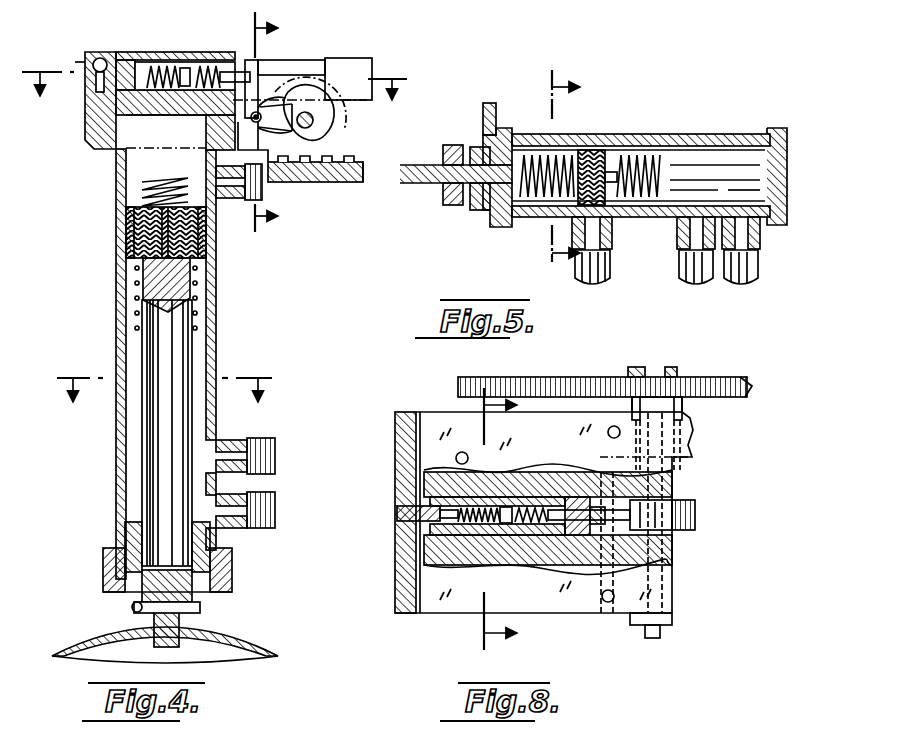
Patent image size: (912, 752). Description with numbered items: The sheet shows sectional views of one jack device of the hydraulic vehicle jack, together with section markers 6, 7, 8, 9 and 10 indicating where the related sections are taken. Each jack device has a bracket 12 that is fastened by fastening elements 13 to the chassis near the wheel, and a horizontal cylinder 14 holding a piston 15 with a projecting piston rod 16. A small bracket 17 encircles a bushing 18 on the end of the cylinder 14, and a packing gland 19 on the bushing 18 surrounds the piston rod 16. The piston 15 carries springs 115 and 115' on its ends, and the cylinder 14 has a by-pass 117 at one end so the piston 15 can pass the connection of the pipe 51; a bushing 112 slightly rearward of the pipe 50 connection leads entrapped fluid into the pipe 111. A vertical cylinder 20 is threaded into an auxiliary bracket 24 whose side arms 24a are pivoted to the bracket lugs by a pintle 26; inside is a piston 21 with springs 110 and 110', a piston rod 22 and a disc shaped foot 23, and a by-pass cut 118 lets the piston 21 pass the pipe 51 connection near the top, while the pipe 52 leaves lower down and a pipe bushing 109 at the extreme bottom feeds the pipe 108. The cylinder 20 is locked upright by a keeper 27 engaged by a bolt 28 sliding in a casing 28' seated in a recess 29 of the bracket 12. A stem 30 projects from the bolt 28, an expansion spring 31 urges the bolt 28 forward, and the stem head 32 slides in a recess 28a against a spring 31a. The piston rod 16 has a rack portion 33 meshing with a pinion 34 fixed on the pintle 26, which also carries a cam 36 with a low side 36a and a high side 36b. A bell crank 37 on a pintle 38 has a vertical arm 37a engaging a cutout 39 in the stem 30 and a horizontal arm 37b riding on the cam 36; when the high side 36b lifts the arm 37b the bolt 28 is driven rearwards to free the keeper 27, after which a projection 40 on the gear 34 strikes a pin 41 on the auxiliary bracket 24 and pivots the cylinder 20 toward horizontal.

In FIG. 4, the section line 6- 6 is at (162, 391).
In FIG. 5, the section line 7- 7 is at (557, 168).
In FIG. 4, the section line 8- 8 is at (212, 89).
In FIG. 4, the section line 9- 9 is at (266, 123).
In FIG. 8, the wheel 10 is at (483, 519).
In FIG. 8, the bracket 12 is at (432, 616).
In FIG. 8, the fastening element 13 is at (608, 602).
In FIG. 5, the horizontal cylinder 14 is at (694, 136).
In FIG. 5, the piston 15 is at (590, 160).
In FIG. 5, the piston rod 16 is at (422, 165).
In FIG. 8, the piston rod 16 is at (748, 382).
In FIG. 5, the small bracket 17 is at (490, 103).
In FIG. 5, the bushing 18 is at (478, 211).
In FIG. 5, the packing gland 19 is at (450, 206).
In FIG. 4, the vertical cylinder 20 is at (116, 350).
In FIG. 4, the piston 21 is at (126, 214).
In FIG. 4, the piston rod 22 is at (152, 447).
In FIG. 4, the foot 23 is at (238, 648).
In FIG. 4, the auxiliary bracket 24 is at (90, 133).
In FIG. 8, the auxiliary bracket 24 is at (400, 600).
In FIG. 8, the side arm 24a is at (694, 437).
In FIG. 8, the pintle 26 is at (660, 636).
In FIG. 4, the keeper 27 is at (84, 58).
In FIG. 8, the keeper 27 is at (400, 572).
In FIG. 8, the bolt 28 is at (407, 513).
In FIG. 4, the casing 28' is at (175, 41).
In FIG. 8, the casing 28' is at (516, 479).
In FIG. 4, the recess 28a is at (120, 104).
In FIG. 8, the recess 28a is at (424, 545).
In FIG. 4, the recess 29 is at (112, 58).
In FIG. 8, the recess 29 is at (496, 497).
In FIG. 4, the stem 30 is at (238, 72).
In FIG. 8, the stem 30 is at (578, 524).
In FIG. 4, the expansion spring 31 is at (208, 66).
In FIG. 8, the expansion spring 31 is at (536, 506).
In FIG. 4, the expansion spring 31a is at (150, 105).
In FIG. 8, the expansion spring 31a is at (455, 540).
In FIG. 4, the head 32 is at (185, 68).
In FIG. 8, the head 32 is at (502, 524).
In FIG. 4, the rack portion 33 is at (330, 178).
In FIG. 8, the rack portion 33 is at (722, 377).
In FIG. 4, the pinion 34 is at (352, 178).
In FIG. 8, the pinion 34 is at (690, 377).
In FIG. 4, the cam 36 is at (330, 128).
In FIG. 8, the cam 36 is at (690, 500).
In FIG. 4, the low side 36a is at (300, 180).
In FIG. 4, the high side 36b is at (338, 146).
In FIG. 4, the bell crank 37 is at (300, 96).
In FIG. 8, the bell crank 37 is at (672, 548).
In FIG. 4, the vertical arm 37a is at (255, 60).
In FIG. 4, the horizontal arm 37b is at (270, 165).
In FIG. 4, the pintle 38 is at (215, 122).
In FIG. 8, the pintle 38 is at (603, 612).
In FIG. 4, the cutout 39 is at (278, 110).
In FIG. 8, the cutout 39 is at (576, 497).
In FIG. 4, the projection 40 is at (318, 118).
In FIG. 8, the projection 40 is at (684, 406).
In FIG. 4, the pin 41 is at (315, 78).
In FIG. 8, the pin 41 is at (608, 380).
In FIG. 5, the pipe 50 is at (679, 264).
In FIG. 4, the pipe 51 is at (238, 200).
In FIG. 5, the pipe 51 is at (612, 256).
In FIG. 4, the pipe 52 is at (265, 440).
In FIG. 4, the pipe 108 is at (266, 530).
In FIG. 4, the pipe bushing 109 is at (236, 528).
In FIG. 4, the spring 110 is at (129, 187).
In FIG. 4, the spring 110' is at (133, 294).
In FIG. 5, the pipe 111 is at (748, 282).
In FIG. 5, the bushing 112 is at (746, 248).
In FIG. 5, the spring 115 is at (560, 153).
In FIG. 5, the spring 115' is at (653, 153).
In FIG. 5, the by-pass 117 is at (506, 227).
In FIG. 4, the by-pass cut 118 is at (208, 158).